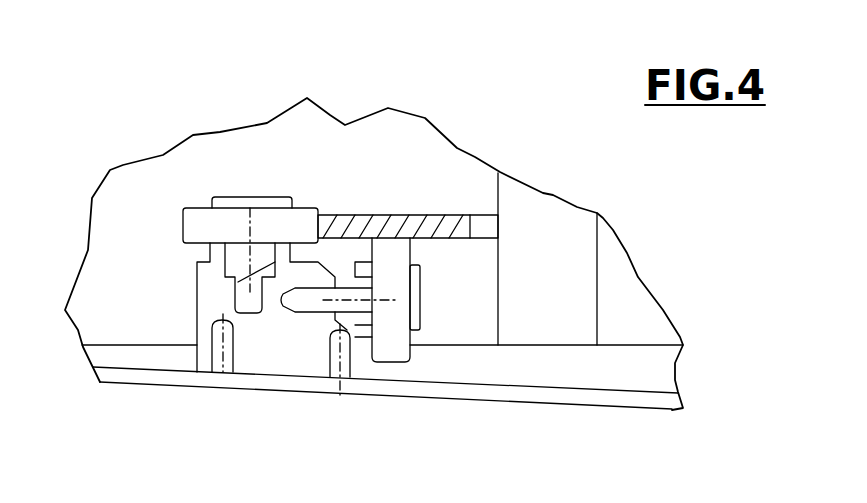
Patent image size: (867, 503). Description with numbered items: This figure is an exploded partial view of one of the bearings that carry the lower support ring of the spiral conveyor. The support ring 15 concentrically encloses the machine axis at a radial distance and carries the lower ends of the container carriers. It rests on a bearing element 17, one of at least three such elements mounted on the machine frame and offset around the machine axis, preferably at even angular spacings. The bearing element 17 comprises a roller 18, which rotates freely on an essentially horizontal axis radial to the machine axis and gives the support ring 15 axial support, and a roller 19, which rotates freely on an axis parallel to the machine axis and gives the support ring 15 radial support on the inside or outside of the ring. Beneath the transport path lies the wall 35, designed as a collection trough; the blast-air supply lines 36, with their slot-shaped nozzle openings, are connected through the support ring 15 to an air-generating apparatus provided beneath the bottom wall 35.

The support ring 15 is at (438, 215).
The bearing element 17 is at (325, 188).
The roller 18 is at (397, 352).
The roller 19 is at (203, 223).
The wall 35 is at (607, 395).
The supply lines for blast air 36 is at (565, 277).